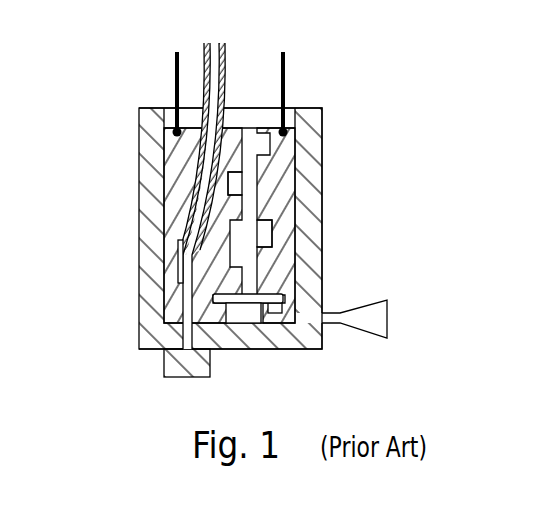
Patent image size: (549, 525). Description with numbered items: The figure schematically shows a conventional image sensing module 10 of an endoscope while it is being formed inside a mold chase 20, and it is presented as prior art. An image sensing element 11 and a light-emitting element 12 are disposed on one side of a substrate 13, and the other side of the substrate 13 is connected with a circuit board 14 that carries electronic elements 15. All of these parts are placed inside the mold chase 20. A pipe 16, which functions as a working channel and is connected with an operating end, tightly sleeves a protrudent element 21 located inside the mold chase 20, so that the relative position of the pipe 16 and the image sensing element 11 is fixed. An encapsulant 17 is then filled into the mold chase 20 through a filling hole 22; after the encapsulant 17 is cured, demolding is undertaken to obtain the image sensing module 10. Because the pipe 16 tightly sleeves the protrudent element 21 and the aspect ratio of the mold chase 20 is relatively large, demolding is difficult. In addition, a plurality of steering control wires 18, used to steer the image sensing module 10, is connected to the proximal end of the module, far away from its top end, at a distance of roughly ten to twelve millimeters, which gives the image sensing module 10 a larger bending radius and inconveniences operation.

The image sensing module 10 is at (155, 87).
The image sensing element 11 is at (245, 315).
The light-emitting element 12 is at (290, 300).
The substrate 13 is at (275, 252).
The circuit board 14 is at (244, 185).
The electronic elements 15 is at (270, 145).
The pipe 16 is at (225, 78).
The encapsulant 17 is at (165, 180).
The steering control wires 18 is at (286, 78).
The mold chase 20 is at (150, 245).
The protrudent element 21 is at (165, 363).
The filling hole 22 is at (386, 316).